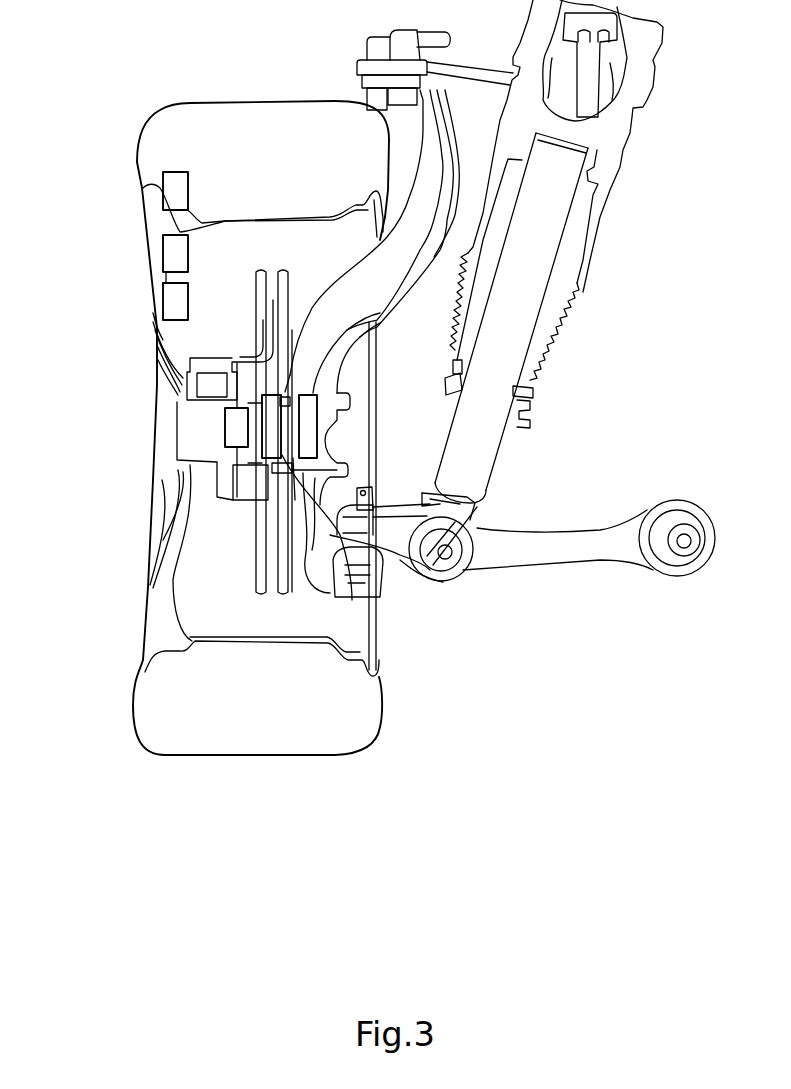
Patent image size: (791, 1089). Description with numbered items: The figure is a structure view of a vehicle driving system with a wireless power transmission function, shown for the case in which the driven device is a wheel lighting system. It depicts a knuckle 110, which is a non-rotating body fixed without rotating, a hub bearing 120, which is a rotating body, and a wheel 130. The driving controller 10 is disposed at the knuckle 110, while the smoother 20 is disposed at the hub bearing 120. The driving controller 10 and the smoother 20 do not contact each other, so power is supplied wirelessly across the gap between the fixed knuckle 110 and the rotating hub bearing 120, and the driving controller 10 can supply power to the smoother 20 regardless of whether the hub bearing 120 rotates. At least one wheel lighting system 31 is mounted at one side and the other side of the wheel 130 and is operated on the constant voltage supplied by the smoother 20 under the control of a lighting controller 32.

The driving controller 10 is at (318, 424).
The smoother 20 is at (350, 597).
The wheel lighting system 31 is at (163, 301).
The lighting controller 32 is at (223, 428).
The knuckle 110 is at (353, 338).
The hub bearing 120 is at (167, 377).
The wheel 130 is at (157, 493).